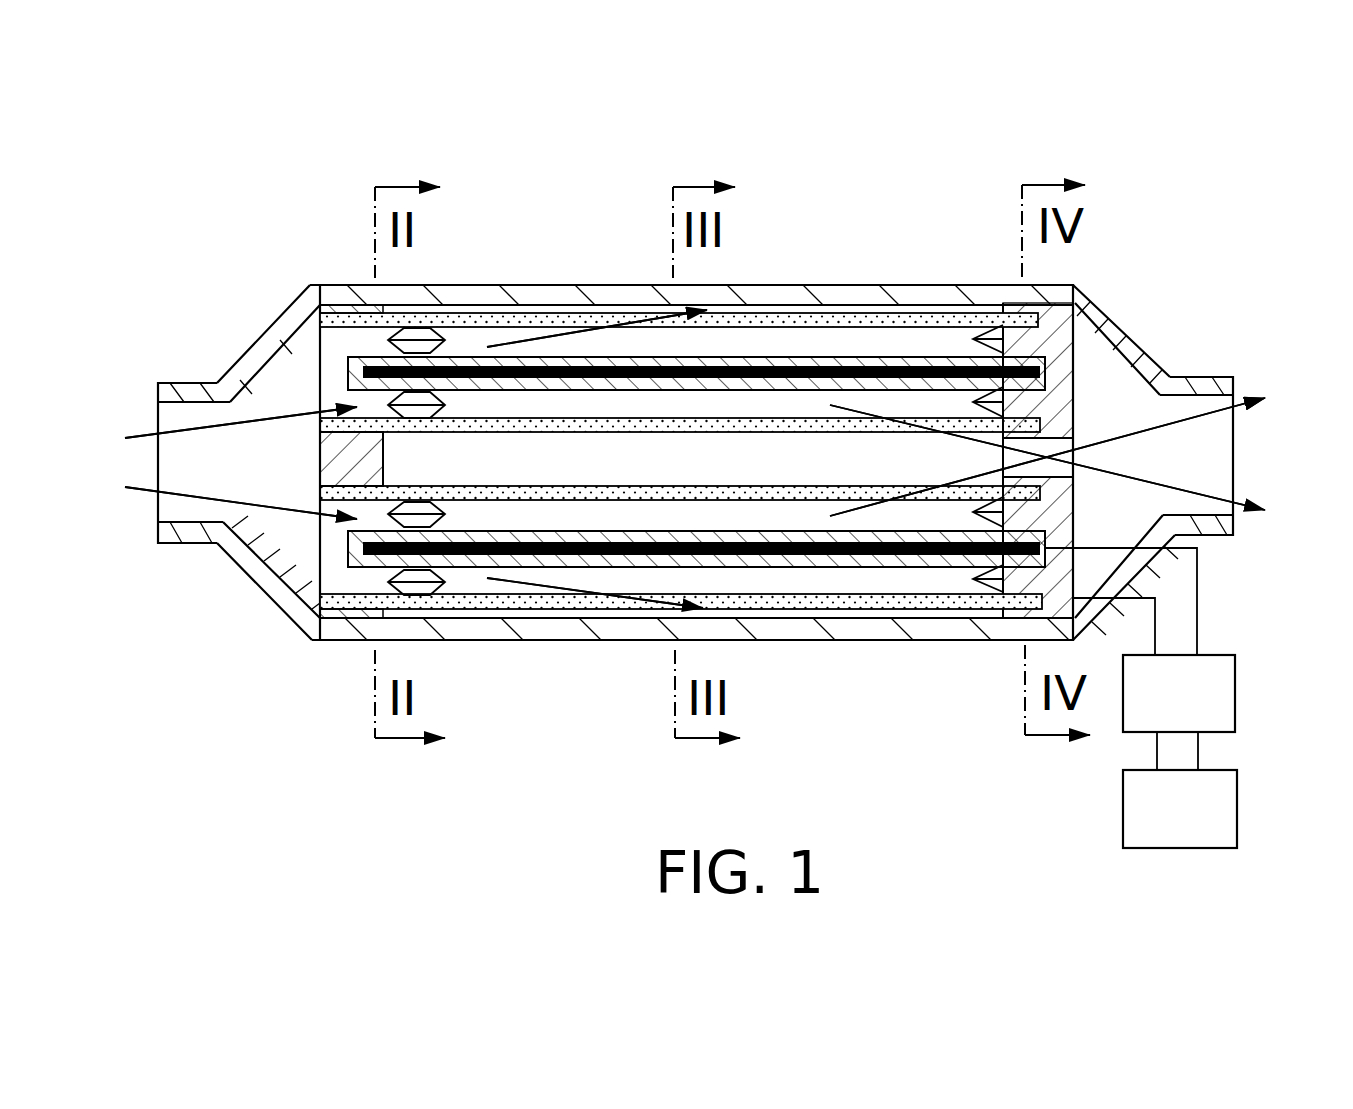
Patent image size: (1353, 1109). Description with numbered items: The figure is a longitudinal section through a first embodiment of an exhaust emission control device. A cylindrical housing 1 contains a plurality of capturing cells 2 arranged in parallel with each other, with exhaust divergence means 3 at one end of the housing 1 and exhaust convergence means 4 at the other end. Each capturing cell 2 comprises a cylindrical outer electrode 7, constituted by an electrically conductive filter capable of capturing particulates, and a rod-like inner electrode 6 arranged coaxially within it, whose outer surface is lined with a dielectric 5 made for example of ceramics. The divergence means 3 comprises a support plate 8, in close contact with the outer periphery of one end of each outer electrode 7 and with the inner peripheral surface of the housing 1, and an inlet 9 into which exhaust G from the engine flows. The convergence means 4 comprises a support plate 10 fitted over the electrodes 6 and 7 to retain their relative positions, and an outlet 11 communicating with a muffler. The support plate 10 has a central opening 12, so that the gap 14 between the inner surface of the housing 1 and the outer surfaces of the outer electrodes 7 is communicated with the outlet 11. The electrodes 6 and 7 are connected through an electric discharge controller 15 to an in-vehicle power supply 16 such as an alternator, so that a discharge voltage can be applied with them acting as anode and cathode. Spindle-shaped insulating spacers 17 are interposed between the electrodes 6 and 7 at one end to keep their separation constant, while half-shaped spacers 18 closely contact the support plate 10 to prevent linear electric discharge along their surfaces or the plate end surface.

The cylindrical housing 1 is at (618, 288).
The capturing cell 2 is at (912, 310).
The exhaust divergence means 3 is at (253, 600).
The exhaust convergence means 4 is at (1148, 337).
The dielectric 5 is at (870, 366).
The inner electrode 6 is at (790, 357).
The outer electrode 7 is at (545, 313).
The support plate 8 is at (343, 455).
The inlet 9 is at (182, 530).
The support plate 10 is at (1060, 362).
The outlet 11 is at (1220, 388).
The central opening 12 is at (1055, 450).
The gap 14 is at (707, 473).
The electric discharge controller 15 is at (1218, 683).
The in-vehicle power supply 16 is at (1224, 805).
The spacer 17 is at (455, 360).
The spacer 18 is at (985, 392).
The exhaust G is at (138, 433).